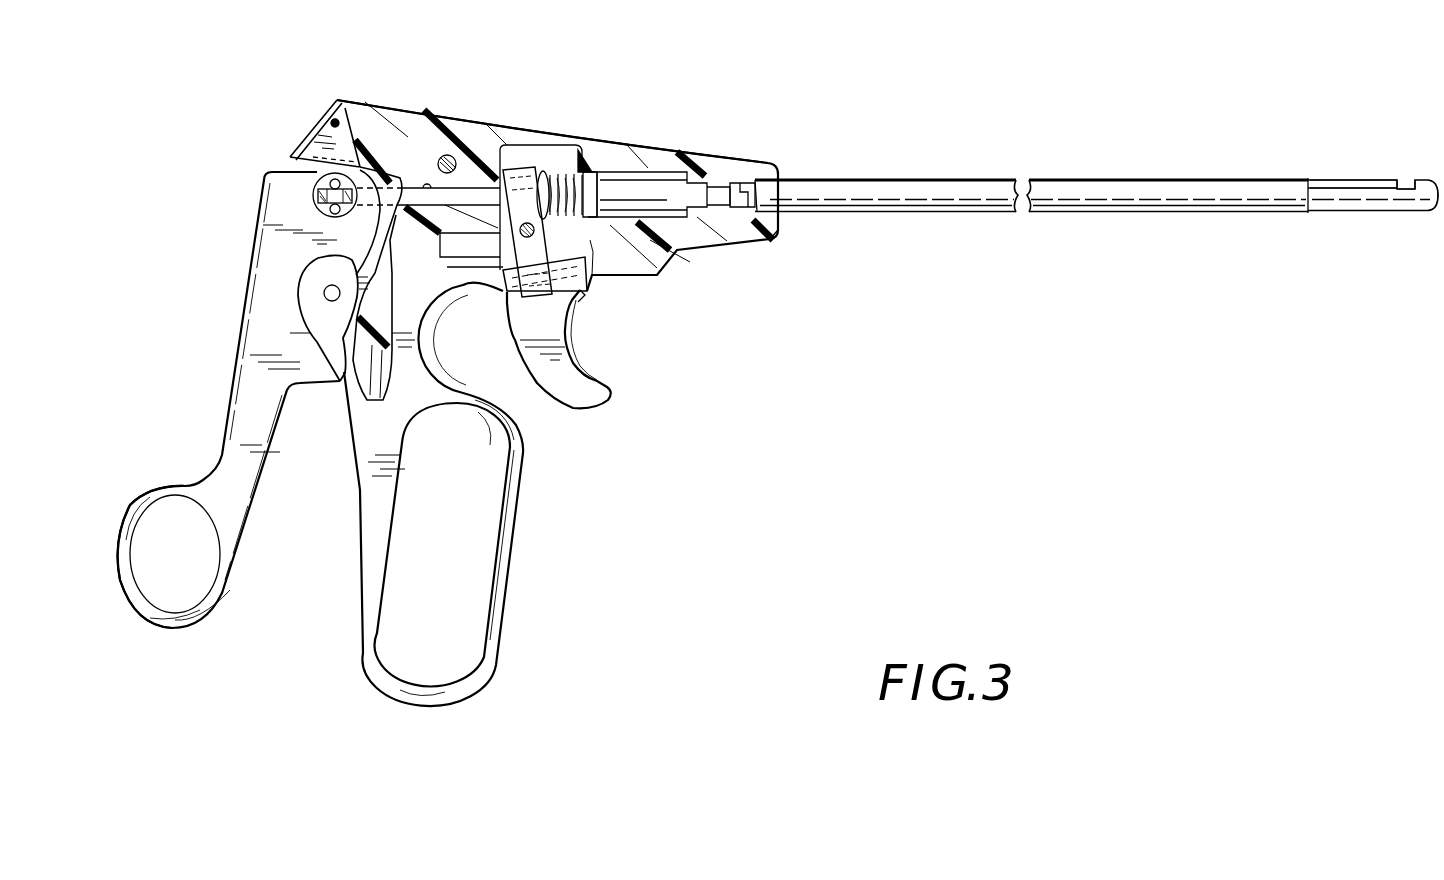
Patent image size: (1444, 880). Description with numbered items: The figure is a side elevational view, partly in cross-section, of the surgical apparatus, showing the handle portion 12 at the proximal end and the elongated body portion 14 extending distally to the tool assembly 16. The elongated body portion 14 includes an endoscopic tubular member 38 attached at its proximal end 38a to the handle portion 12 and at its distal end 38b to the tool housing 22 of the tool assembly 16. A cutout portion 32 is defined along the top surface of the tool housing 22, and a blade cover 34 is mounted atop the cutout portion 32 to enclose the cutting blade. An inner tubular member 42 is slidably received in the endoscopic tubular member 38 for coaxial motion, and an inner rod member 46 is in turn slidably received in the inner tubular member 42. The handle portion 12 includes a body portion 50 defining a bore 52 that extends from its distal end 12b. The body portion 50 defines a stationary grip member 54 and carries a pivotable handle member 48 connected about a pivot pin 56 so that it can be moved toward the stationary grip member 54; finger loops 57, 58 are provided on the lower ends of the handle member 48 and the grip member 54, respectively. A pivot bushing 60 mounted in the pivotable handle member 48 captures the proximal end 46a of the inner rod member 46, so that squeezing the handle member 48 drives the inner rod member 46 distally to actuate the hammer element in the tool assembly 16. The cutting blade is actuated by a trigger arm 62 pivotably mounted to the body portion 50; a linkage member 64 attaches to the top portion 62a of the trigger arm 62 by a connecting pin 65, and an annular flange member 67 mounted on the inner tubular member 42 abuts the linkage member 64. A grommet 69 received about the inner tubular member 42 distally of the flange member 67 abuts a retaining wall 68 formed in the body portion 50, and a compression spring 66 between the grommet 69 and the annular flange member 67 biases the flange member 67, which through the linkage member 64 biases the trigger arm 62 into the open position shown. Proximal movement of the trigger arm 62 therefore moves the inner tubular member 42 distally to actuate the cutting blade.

The handle portion 12 is at (662, 116).
The distal end 12b is at (733, 170).
The elongated body portion 14 is at (1000, 170).
The tool assembly 16 is at (1338, 226).
The tool housing portion 22 is at (1385, 195).
The cutout portion 32 is at (1408, 179).
The blade cover 34 is at (1365, 178).
The endoscopic tubular member 38 is at (997, 197).
The proximal end 38a is at (762, 188).
The distal end 38b is at (1308, 178).
The inner tubular member 42 is at (748, 200).
The inner rod member 46 is at (512, 168).
The proximal end 46a is at (313, 180).
The pivotable handle member 48 is at (272, 312).
The body portion 50 is at (388, 108).
The bore 52 is at (422, 186).
The stationary grip member 54 is at (370, 500).
The pivot pin 56 is at (336, 119).
The finger loop 57 is at (175, 632).
The finger loop 58 is at (463, 697).
The pivot bushing 60 is at (317, 207).
The trigger arm 62 is at (593, 380).
The top portion 62a is at (582, 297).
The linkage member 64 is at (520, 165).
The connecting pin 65 is at (505, 325).
The compression spring 66 is at (575, 170).
The annular flange member 67 is at (548, 172).
The retaining wall 68 is at (593, 252).
The grommet 69 is at (598, 172).